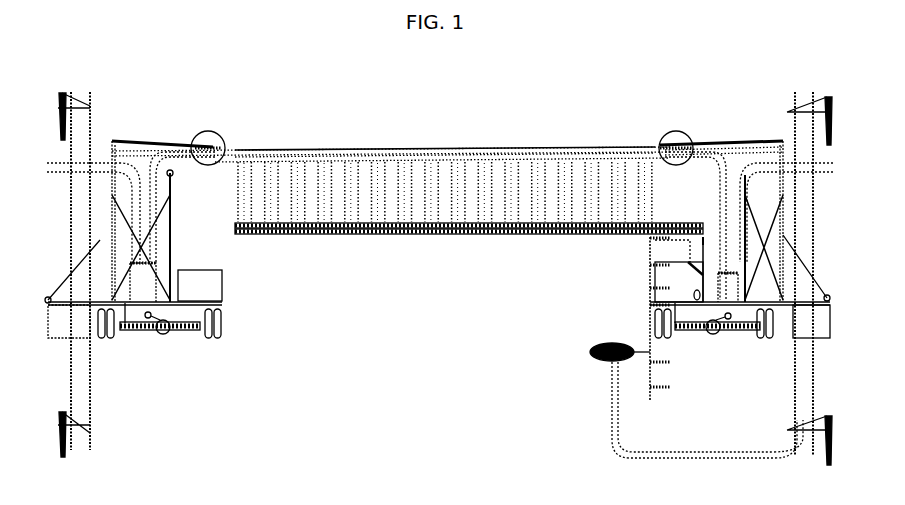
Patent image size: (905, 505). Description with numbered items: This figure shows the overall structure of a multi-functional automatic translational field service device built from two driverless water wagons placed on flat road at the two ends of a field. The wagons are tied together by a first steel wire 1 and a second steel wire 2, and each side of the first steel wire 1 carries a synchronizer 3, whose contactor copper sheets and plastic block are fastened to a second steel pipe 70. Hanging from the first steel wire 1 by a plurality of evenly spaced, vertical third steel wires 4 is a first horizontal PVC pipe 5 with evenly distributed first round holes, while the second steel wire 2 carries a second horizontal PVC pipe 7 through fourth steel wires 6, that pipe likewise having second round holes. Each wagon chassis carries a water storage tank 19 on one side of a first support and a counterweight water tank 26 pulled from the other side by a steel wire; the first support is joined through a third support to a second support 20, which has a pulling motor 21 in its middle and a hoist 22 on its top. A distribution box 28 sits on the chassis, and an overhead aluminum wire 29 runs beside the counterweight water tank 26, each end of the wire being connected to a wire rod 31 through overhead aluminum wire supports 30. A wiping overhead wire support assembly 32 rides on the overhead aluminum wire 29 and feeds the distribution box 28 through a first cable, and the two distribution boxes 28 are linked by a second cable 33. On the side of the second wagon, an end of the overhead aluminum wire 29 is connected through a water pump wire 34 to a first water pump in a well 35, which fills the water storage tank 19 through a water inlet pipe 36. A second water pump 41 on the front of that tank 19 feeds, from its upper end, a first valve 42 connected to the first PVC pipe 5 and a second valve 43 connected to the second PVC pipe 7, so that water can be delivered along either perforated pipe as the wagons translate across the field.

The first steel wire 1 is at (485, 152).
The second steel wire 2 is at (523, 158).
The synchronizer 3 is at (673, 128).
The third steel wires 4 is at (575, 188).
The first horizontal PVC pipe 5 is at (588, 234).
The fourth steel wires 6 is at (612, 183).
The second horizontal PVC pipe 7 is at (618, 236).
The water storage tank 19 is at (223, 290).
The second support 20 is at (72, 203).
The pulling motor 21 is at (835, 229).
The hoist 22 is at (176, 177).
The counterweight water tank 26 is at (752, 374).
The distribution box 28 is at (167, 336).
The overhead aluminum wire 29 is at (835, 198).
The overhead aluminum wire supports 30 is at (858, 438).
The wire rod 31 is at (860, 466).
The wiping overhead wire support assembly 32 is at (112, 193).
The second cable 33 is at (553, 160).
The water pump wire 34 is at (790, 440).
The well 35 is at (598, 362).
The water inlet pipe 36 is at (670, 372).
The second water pump 41 is at (700, 330).
The first valve 42 is at (700, 243).
The second valve 43 is at (697, 242).
The second steel pipe 70 is at (66, 278).